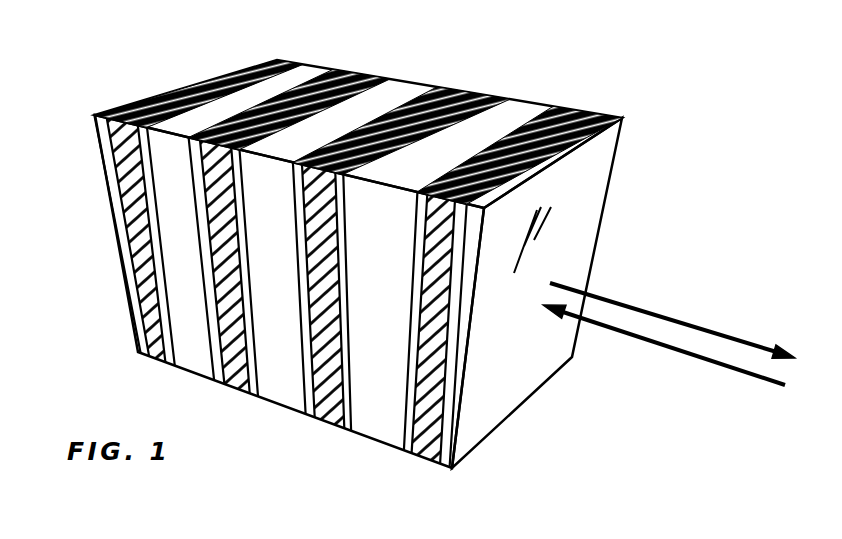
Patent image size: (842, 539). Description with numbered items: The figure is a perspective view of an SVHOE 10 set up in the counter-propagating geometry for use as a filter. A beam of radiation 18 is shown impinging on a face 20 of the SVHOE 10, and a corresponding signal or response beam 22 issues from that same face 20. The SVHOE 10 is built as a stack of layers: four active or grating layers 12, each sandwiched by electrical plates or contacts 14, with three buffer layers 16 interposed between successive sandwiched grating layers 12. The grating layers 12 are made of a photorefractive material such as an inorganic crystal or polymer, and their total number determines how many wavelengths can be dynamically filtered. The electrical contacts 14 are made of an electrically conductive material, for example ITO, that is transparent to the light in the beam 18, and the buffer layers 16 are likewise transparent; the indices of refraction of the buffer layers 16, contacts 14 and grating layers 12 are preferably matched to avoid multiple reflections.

The SVHOE 10 is at (121, 58).
The grating layers 12 is at (598, 112).
The electrical contacts 14 is at (406, 457).
The buffer layers 16 is at (537, 103).
The beam of radiation 18 is at (667, 347).
The face 20 is at (591, 209).
The response beam 22 is at (657, 312).